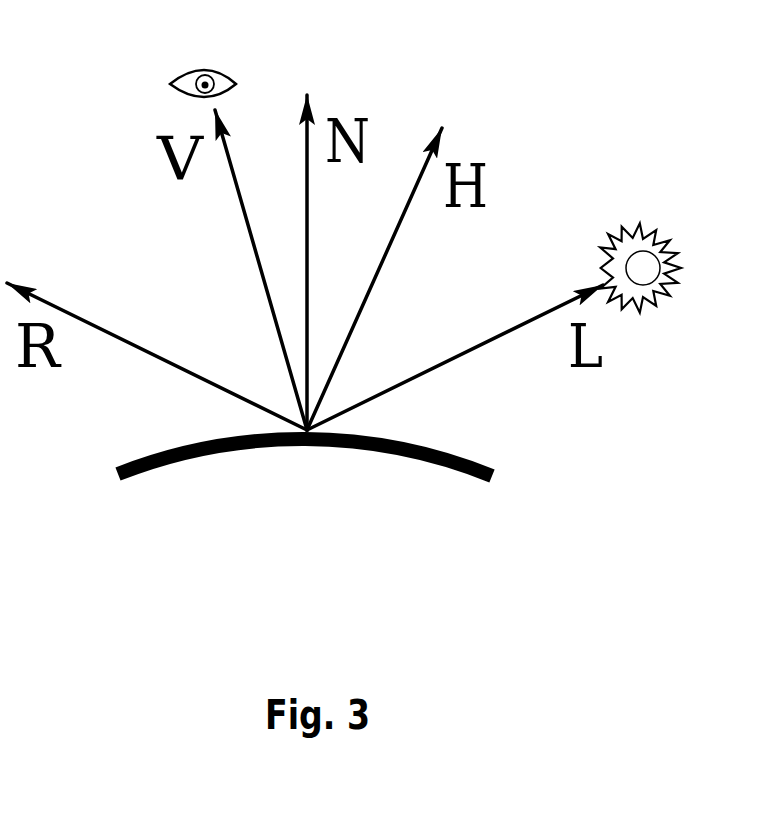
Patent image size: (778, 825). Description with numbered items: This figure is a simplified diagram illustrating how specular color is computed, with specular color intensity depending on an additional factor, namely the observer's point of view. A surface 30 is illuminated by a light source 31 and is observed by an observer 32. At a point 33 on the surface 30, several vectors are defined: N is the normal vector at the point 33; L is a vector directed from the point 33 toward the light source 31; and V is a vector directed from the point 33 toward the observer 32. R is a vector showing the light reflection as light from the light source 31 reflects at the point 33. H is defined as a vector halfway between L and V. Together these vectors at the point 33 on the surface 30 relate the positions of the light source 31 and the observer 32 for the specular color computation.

The surface 30 is at (305, 461).
The light source 31 is at (644, 258).
The observer 32 is at (203, 65).
The point 33 is at (307, 432).